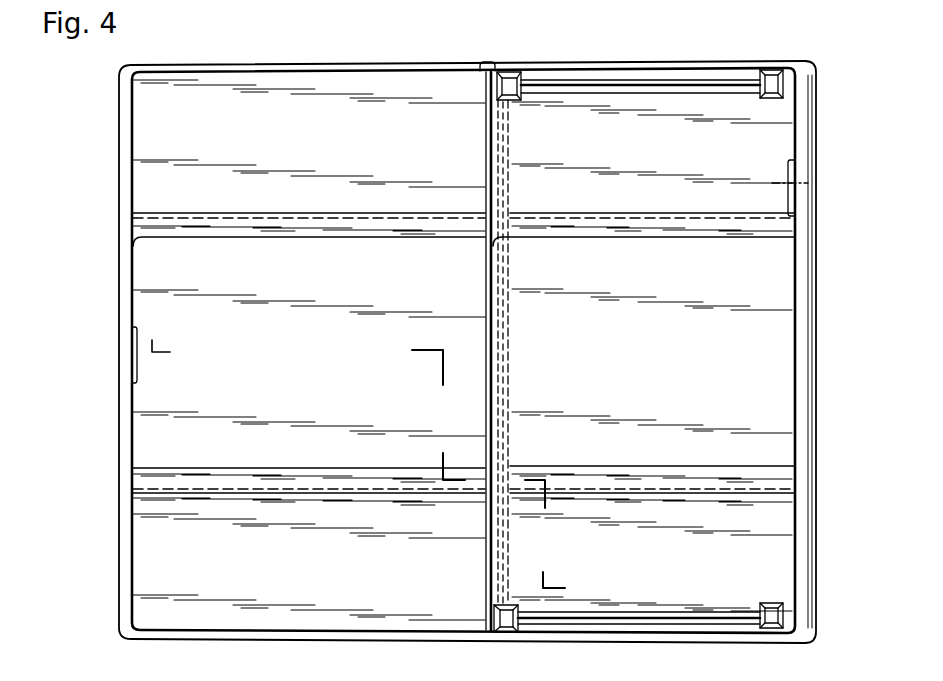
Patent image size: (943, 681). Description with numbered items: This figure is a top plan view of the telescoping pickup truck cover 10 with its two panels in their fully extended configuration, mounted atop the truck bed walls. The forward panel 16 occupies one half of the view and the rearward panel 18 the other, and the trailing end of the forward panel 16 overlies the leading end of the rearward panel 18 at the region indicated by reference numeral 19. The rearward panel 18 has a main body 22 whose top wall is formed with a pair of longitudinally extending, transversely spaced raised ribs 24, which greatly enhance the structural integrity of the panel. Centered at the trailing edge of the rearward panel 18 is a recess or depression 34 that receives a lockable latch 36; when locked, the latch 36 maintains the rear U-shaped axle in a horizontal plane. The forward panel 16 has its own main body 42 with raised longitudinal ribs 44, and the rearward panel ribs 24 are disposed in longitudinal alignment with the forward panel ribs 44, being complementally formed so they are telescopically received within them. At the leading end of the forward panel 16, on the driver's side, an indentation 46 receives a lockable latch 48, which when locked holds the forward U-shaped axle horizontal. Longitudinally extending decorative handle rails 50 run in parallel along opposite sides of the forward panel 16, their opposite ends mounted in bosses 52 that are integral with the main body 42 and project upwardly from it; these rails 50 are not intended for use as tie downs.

The cover 10 is at (442, 31).
The forward panel 16 is at (566, 108).
The rearward panel 18 is at (231, 94).
The overlap of forward panel trailing end over rear panel leading end 19 is at (489, 53).
The main body 22 is at (290, 114).
The raised ribs 24 is at (211, 229).
The recess 34 is at (138, 362).
The lockable latch 36 is at (153, 339).
The main body 42 is at (695, 107).
The raised longitudinal ribs 44 is at (640, 213).
The indentation 46 is at (788, 166).
The lockable latch 48 is at (772, 183).
The decorative handle rails 50 is at (642, 87).
The bosses 52 is at (508, 82).